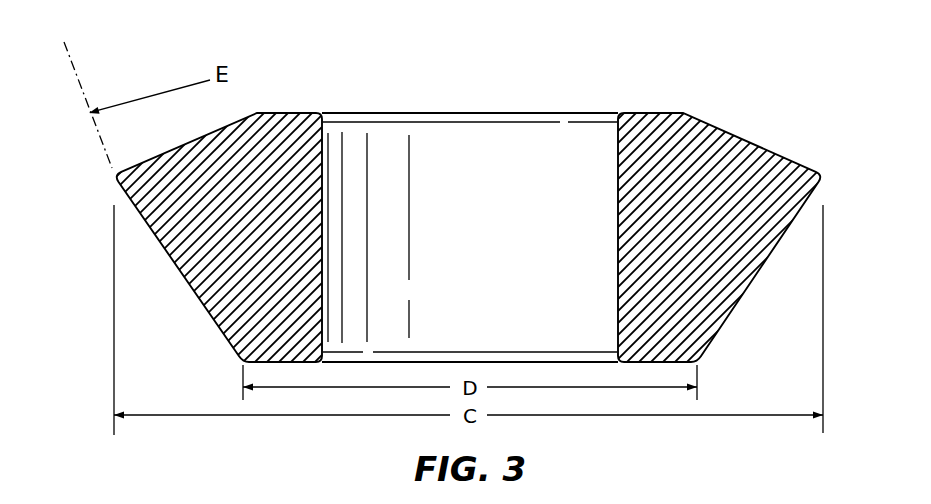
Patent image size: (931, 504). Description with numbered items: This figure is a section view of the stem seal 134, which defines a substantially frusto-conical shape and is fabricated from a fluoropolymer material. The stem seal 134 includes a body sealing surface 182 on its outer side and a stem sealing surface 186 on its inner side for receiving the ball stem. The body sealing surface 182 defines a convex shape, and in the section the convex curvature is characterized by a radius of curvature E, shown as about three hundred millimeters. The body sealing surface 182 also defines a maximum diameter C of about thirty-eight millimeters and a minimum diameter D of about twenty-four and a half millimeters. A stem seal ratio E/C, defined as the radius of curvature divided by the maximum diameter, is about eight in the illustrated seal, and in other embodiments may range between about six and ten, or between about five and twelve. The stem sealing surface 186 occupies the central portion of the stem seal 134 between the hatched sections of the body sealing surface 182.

The stem seal 134 is at (764, 110).
The body sealing surface 182 is at (168, 273).
The stem sealing surface 186 is at (448, 240).